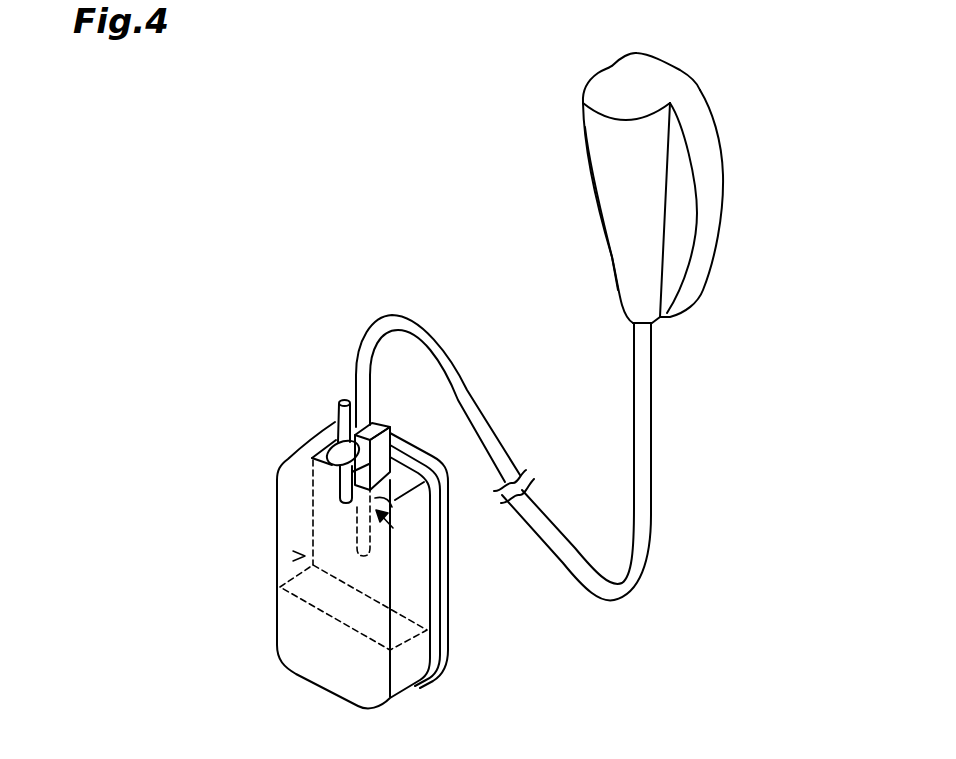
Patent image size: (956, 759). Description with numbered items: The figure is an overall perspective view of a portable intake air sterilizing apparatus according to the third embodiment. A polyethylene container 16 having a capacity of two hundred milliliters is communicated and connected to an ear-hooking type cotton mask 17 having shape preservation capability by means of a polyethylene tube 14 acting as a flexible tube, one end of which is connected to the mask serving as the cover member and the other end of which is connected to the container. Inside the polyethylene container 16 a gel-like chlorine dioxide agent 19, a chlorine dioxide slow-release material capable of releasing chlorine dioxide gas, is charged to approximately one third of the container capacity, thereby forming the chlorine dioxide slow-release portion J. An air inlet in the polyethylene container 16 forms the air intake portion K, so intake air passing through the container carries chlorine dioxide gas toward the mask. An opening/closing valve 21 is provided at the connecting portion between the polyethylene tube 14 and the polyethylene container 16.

The polyethylene tube 14 is at (651, 443).
The polyethylene container 16 is at (277, 533).
The ear-hooking type cotton mask 17 is at (622, 203).
The gel-like chlorine dioxide agent 19 is at (303, 626).
The opening/closing valve 21 is at (390, 462).
The chlorine dioxide slow-release portion J is at (293, 556).
The air intake portion K is at (393, 528).